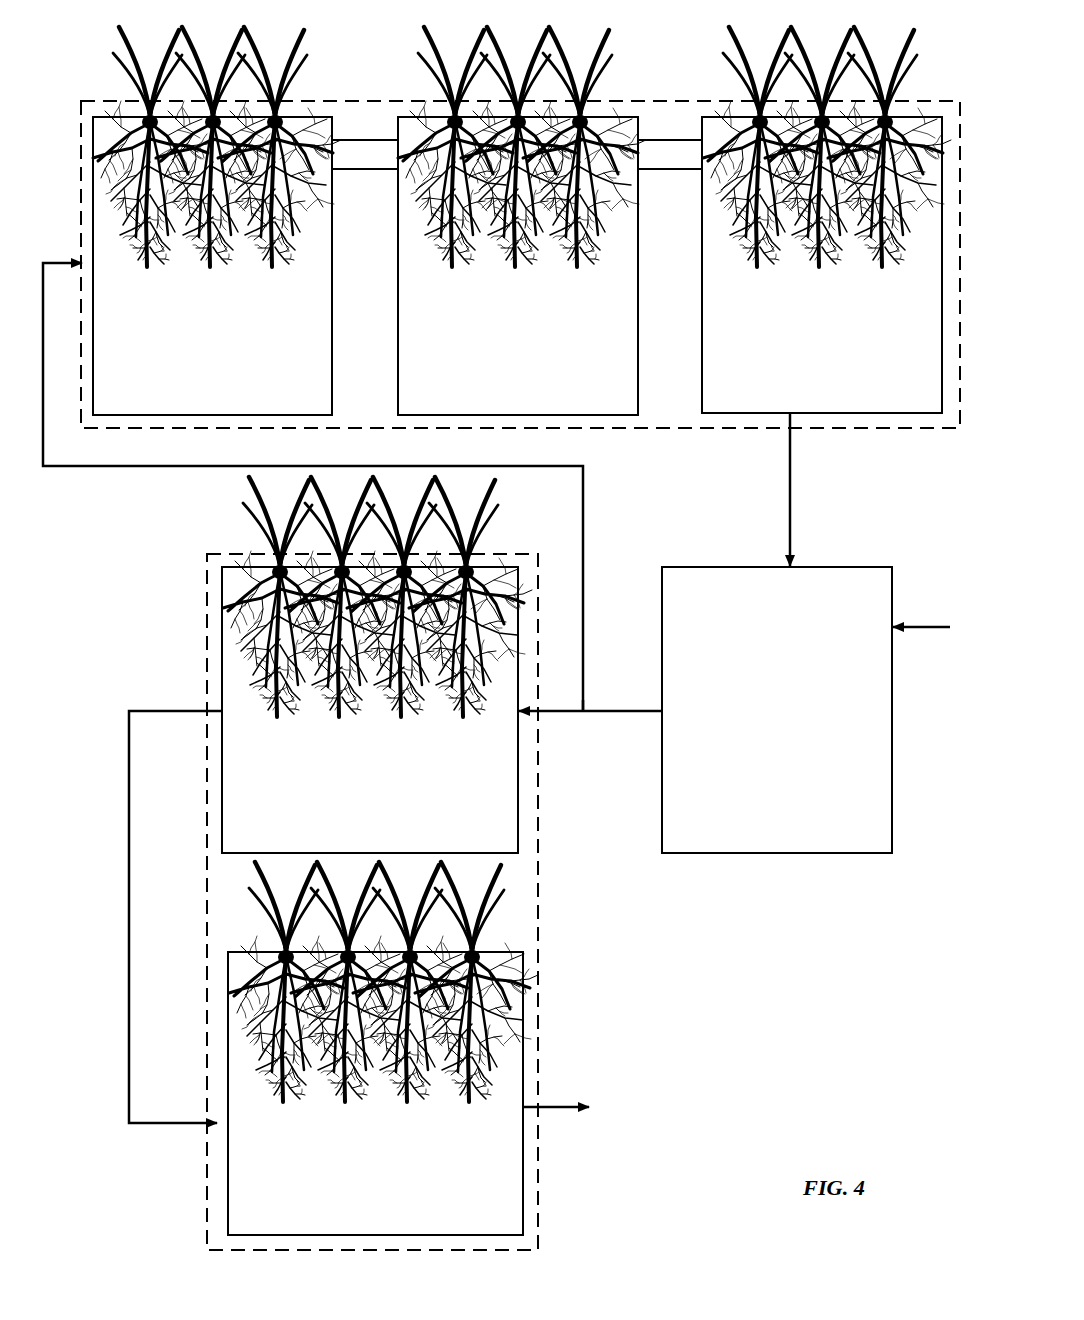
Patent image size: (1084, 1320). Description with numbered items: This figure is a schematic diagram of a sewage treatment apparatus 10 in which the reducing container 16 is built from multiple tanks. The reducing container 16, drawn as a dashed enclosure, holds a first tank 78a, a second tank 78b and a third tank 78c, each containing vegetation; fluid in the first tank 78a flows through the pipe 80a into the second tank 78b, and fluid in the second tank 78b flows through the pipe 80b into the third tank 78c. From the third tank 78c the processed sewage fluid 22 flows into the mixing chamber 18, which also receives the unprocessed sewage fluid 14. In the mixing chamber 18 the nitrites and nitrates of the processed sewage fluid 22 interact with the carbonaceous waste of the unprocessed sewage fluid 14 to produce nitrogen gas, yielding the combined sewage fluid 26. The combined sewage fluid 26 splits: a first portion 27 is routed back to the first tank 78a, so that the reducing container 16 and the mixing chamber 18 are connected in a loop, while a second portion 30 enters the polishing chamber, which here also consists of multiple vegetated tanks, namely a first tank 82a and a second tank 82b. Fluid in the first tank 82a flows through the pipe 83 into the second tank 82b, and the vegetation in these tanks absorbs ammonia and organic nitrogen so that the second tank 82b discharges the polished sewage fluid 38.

The sewage treatment apparatus 10 is at (97, 1).
The unprocessed sewage fluid 14 is at (905, 626).
The reducing container 16 is at (652, 101).
The mixing chamber 18 is at (872, 845).
The processed sewage fluid 22 is at (790, 492).
The combined sewage fluid 26 is at (633, 714).
The first portion of the combined sewage fluid 27 is at (548, 467).
The second portion of the combined sewage fluid 30 is at (563, 714).
The polished sewage fluid 38 is at (555, 1102).
The first tank 78a is at (278, 408).
The second tank 78b is at (598, 408).
The third tank 78c is at (890, 407).
The pipe 80a is at (383, 168).
The pipe 80b is at (688, 168).
The first tank 82a is at (435, 843).
The second tank 82b is at (442, 1230).
The pipe 83 is at (129, 850).